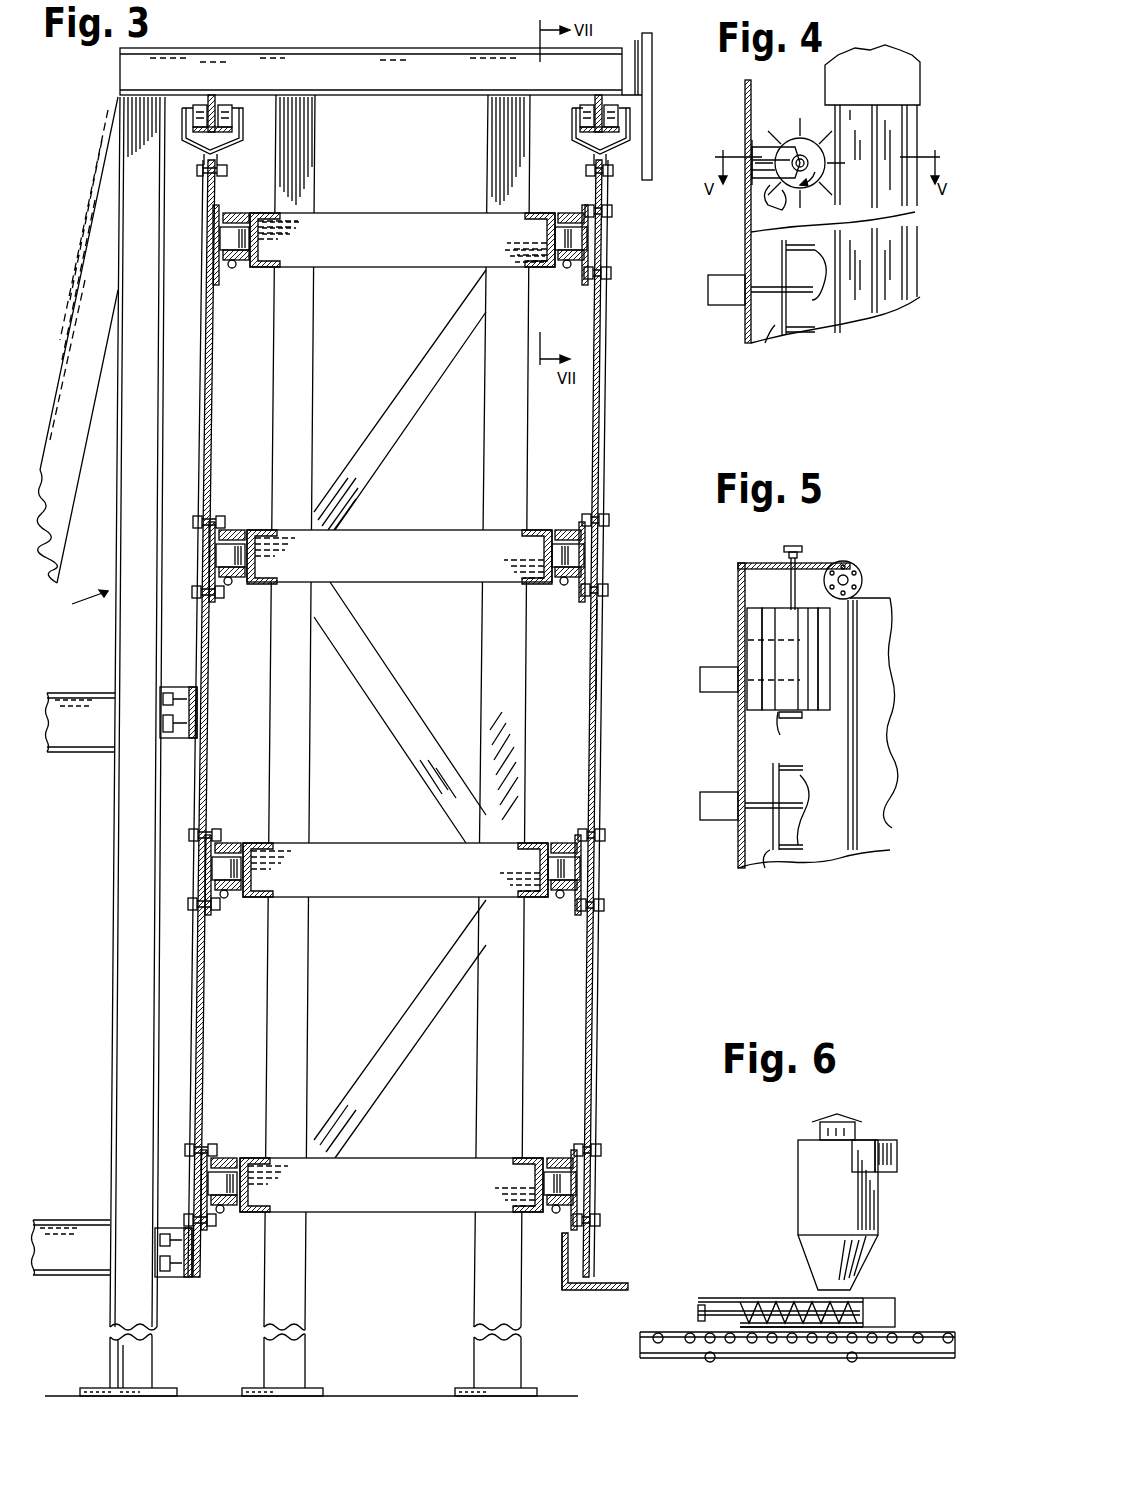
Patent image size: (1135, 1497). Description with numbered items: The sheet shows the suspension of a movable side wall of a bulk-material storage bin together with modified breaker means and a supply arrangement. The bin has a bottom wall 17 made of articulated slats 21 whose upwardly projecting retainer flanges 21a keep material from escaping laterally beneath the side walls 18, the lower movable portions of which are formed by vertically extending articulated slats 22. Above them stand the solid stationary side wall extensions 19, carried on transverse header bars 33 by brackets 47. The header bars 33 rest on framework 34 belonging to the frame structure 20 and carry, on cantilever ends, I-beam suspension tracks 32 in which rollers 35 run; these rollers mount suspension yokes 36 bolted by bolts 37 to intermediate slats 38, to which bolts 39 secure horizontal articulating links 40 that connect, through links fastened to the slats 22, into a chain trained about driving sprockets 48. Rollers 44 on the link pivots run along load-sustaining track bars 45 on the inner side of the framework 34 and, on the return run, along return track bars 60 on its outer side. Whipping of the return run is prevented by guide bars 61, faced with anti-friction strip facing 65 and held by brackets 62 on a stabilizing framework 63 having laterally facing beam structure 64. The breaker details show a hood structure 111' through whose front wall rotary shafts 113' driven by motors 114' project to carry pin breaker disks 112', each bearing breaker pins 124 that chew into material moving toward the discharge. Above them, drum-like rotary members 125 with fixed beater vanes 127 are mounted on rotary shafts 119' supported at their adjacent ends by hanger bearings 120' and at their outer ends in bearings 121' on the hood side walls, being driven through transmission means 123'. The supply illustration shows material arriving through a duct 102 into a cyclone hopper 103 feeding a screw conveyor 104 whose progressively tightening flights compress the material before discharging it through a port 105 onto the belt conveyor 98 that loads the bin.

In FIG. 5, the bottom wall 17 is at (880, 672).
In FIG. 3, the side walls 18 is at (603, 692).
In FIG. 4, the side walls 18 is at (917, 280).
In FIG. 5, the side walls 18 is at (890, 598).
In FIG. 3, the side wall extensions 19 is at (653, 138).
In FIG. 3, the frame structure 20 is at (75, 603).
In FIG. 3, the slats 21 is at (612, 1283).
In FIG. 3, the retainer flanges 21a is at (563, 1262).
In FIG. 3, the slats 22 is at (203, 378).
In FIG. 4, the slats 22 is at (905, 240).
In FIG. 3, the suspension tracks 32 is at (215, 98).
In FIG. 3, the header bars 33 is at (345, 55).
In FIG. 3, the framework 34 is at (276, 628).
In FIG. 3, the rollers 35 is at (232, 128).
In FIG. 3, the suspension yokes 36 is at (196, 143).
In FIG. 3, the bolts 37 is at (198, 178).
In FIG. 3, the intermediate slats 38 is at (214, 380).
In FIG. 3, the bolts 39 is at (604, 271).
In FIG. 3, the articulating links 40 is at (219, 214).
In FIG. 3, the rollers 44 is at (252, 240).
In FIG. 3, the track bars 45 is at (542, 232).
In FIG. 3, the brackets 47 is at (636, 45).
In FIG. 5, the driving sprockets 48 is at (856, 566).
In FIG. 3, the return track bars 60 is at (256, 270).
In FIG. 3, the guide bars 61 is at (178, 687).
In FIG. 3, the brackets 62 is at (168, 738).
In FIG. 3, the stabilizing framework 63 is at (118, 650).
In FIG. 3, the beam structure 64 is at (76, 300).
In FIG. 3, the anti-friction strip facing 65 is at (191, 740).
In FIG. 6, the belt conveyor 98 is at (678, 1332).
In FIG. 6, the duct 102 is at (890, 1138).
In FIG. 6, the cyclone hopper 103 is at (798, 1183).
In FIG. 6, the screw conveyor 104 is at (790, 1298).
In FIG. 6, the port 105 is at (730, 1330).
In FIG. 4, the hood structure 111' is at (719, 211).
In FIG. 5, the hood structure 111' is at (714, 715).
In FIG. 4, the breaker disks 112' is at (788, 310).
In FIG. 5, the breaker disks 112' is at (779, 804).
In FIG. 5, the rotary shafts 113' is at (751, 793).
In FIG. 4, the motors 114' is at (714, 305).
In FIG. 5, the motors 114' is at (708, 742).
In FIG. 4, the rotary shaft 119' is at (751, 143).
In FIG. 5, the rotary shaft 119' is at (744, 584).
In FIG. 4, the hanger bearings 120' is at (800, 142).
In FIG. 5, the bearings 121' is at (787, 554).
In FIG. 5, the transmission means 123' is at (825, 538).
In FIG. 4, the breaker pins 124 is at (798, 330).
In FIG. 5, the breaker pins 124 is at (805, 824).
In FIG. 4, the rotary members 125 is at (760, 178).
In FIG. 5, the rotary members 125 is at (780, 610).
In FIG. 4, the beater vanes 127 is at (790, 200).
In FIG. 5, the beater vanes 127 is at (762, 640).